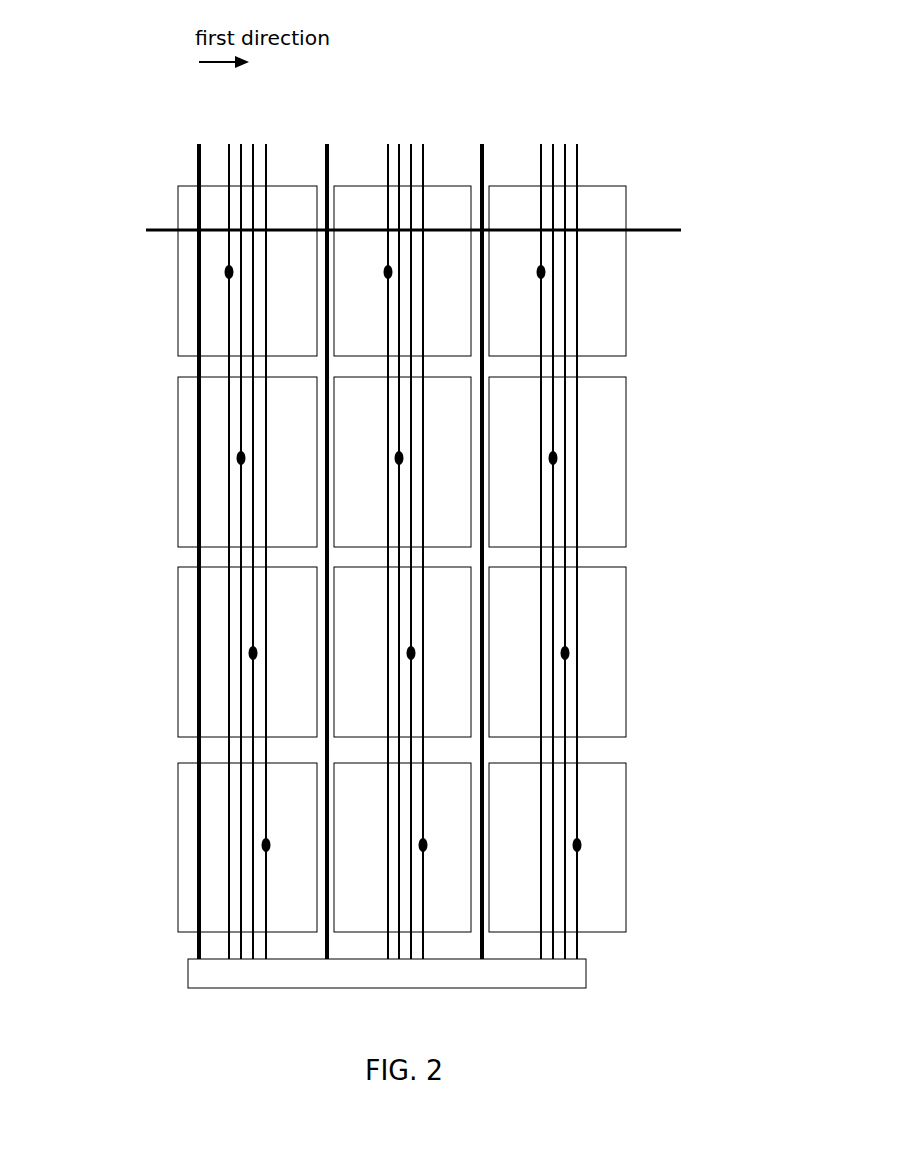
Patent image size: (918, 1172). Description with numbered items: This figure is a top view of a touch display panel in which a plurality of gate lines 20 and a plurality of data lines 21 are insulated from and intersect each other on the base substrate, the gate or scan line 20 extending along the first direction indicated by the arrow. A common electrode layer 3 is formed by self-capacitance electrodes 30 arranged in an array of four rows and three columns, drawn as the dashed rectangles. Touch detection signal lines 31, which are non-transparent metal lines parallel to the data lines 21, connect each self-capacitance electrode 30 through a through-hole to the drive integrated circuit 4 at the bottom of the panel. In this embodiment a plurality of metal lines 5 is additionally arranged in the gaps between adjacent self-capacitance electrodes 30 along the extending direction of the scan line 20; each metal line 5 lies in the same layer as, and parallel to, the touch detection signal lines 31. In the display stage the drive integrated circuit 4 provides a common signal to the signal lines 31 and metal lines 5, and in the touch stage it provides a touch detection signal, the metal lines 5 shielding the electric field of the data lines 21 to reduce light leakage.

The gate line 20 is at (163, 227).
The data line 21 is at (199, 163).
The touch detection signal line 31 is at (266, 144).
The metal line 5 is at (483, 160).
The self-capacitance electrode 30 is at (627, 302).
The common electrode layer 3 is at (631, 426).
The drive integrated circuit 4 is at (586, 973).